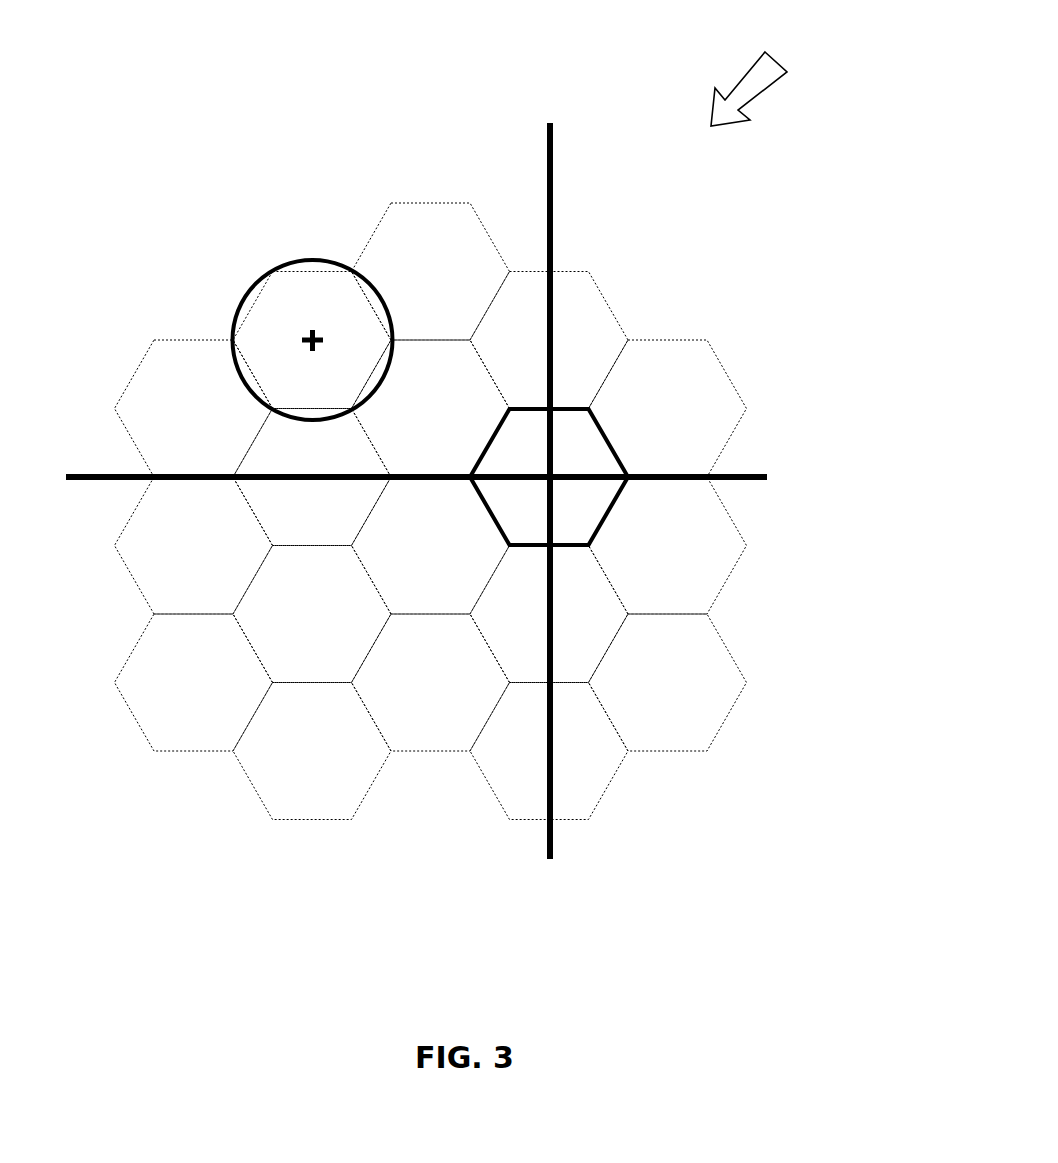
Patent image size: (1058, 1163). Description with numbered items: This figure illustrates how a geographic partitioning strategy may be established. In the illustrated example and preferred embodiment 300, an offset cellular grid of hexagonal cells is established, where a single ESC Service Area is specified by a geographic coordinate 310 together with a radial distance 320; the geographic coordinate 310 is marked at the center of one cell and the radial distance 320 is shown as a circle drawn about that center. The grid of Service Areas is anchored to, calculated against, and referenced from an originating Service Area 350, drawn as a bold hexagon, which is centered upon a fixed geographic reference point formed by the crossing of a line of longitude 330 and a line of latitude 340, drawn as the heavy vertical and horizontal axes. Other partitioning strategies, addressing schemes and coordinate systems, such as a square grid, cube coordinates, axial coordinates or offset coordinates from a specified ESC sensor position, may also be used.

The preferred embodiment 300 is at (768, 78).
The geographic coordinate 310 is at (298, 324).
The radial distance 320 is at (265, 340).
The line of longitude 330 is at (556, 378).
The line of latitude 340 is at (604, 470).
The originating SA 350 is at (488, 426).